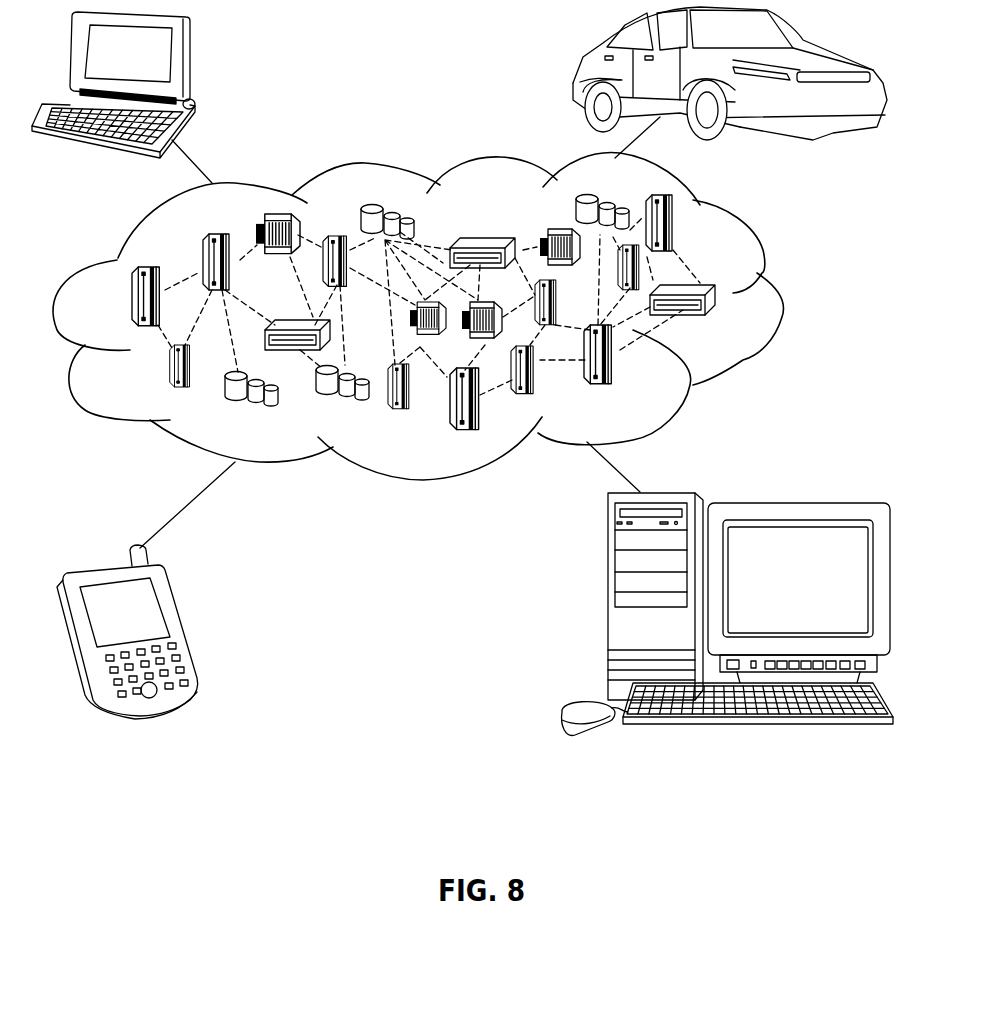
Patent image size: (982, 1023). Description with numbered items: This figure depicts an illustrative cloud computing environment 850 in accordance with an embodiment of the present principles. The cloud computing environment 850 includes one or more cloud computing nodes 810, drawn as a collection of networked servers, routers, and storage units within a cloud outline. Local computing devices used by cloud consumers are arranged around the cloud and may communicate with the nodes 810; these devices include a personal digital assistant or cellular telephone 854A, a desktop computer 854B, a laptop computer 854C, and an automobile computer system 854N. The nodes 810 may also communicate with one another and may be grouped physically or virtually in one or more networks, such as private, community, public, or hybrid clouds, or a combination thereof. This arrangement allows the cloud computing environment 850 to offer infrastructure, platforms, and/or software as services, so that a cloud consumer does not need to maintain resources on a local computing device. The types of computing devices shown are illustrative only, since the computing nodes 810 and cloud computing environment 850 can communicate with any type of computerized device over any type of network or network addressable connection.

The cloud computing nodes 810 is at (740, 317).
The cloud computing environment 850 is at (763, 260).
The personal digital assistant (PDA) or cellular telephone 854A is at (180, 623).
The desktop computer 854B is at (608, 603).
The laptop computer 854C is at (190, 57).
The automobile computer system 854N is at (577, 65).